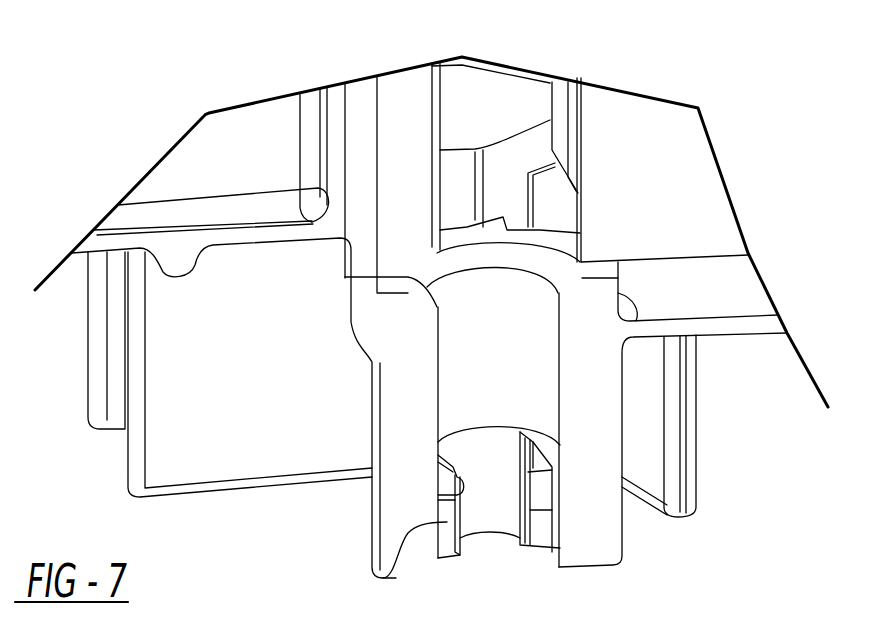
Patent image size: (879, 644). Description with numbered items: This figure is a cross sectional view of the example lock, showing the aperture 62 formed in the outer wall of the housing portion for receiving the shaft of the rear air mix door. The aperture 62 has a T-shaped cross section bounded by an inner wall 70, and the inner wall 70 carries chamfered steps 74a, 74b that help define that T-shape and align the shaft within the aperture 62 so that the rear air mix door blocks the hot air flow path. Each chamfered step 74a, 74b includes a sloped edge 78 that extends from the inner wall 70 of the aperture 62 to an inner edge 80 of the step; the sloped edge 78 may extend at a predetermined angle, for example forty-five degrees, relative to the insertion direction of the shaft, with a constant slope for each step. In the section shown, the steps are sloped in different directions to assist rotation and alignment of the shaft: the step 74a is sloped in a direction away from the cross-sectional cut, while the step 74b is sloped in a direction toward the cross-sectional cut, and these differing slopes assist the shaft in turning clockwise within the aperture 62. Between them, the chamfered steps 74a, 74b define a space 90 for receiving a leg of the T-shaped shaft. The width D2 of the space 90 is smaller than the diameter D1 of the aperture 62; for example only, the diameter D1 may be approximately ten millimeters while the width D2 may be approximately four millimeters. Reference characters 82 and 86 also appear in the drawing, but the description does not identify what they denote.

The aperture 62 is at (490, 288).
The inner wall 70 is at (540, 300).
The chamfered step 74a is at (447, 550).
The chamfered step 74b is at (542, 538).
The sloped edge 78 is at (433, 468).
The inner edge 80 is at (433, 495).
The tab 82 is at (542, 510).
The foot 86 is at (400, 577).
The space 90 is at (480, 440).
The diameter of the aperture D1 is at (557, 340).
The width of the space D2 is at (520, 503).